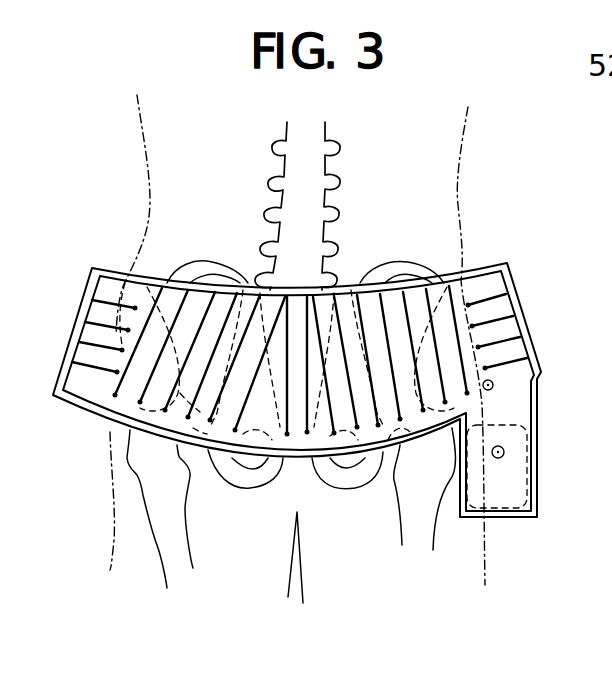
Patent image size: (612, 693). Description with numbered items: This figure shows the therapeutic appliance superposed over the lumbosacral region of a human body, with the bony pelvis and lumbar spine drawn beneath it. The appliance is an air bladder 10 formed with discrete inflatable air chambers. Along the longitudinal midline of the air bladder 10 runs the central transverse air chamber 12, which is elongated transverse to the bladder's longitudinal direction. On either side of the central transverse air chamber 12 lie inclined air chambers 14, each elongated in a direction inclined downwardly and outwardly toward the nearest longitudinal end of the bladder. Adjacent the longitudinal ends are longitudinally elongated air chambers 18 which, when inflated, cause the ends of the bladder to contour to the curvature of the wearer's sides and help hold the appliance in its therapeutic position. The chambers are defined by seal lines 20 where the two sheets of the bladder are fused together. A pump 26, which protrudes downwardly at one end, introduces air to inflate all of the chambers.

The air bladder 10 is at (74, 290).
The central transverse air chamber 12 is at (296, 301).
The inclined air chambers 14 is at (397, 296).
The longitudinally elongated air chambers 18 is at (497, 308).
The seal lines 20 is at (449, 280).
The pump 26 is at (517, 472).